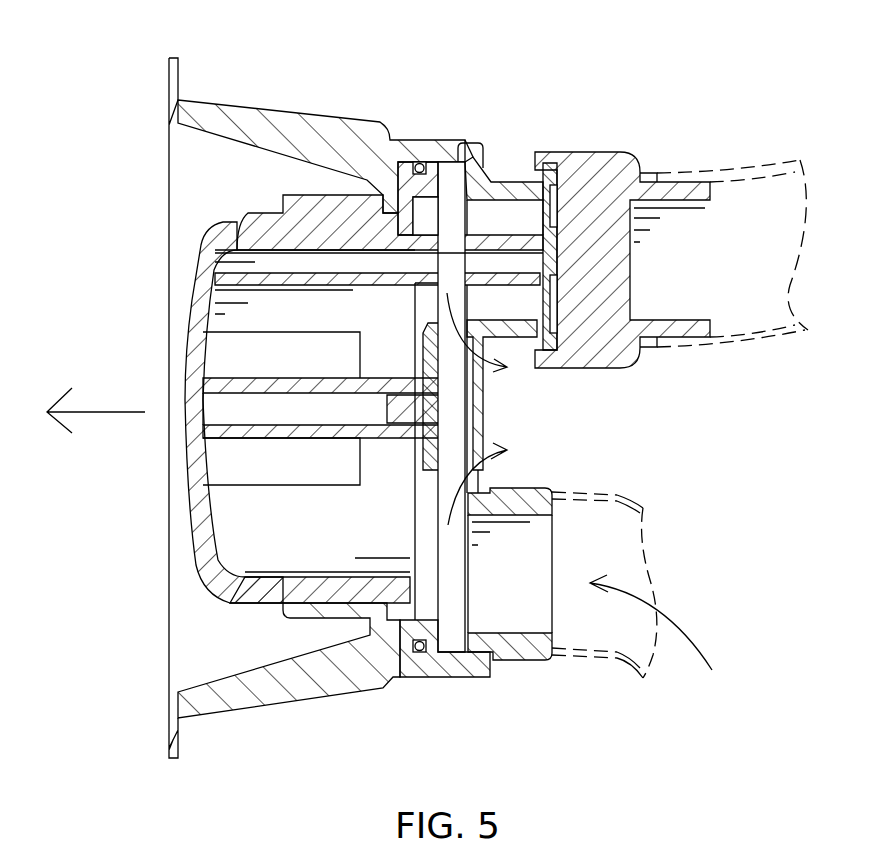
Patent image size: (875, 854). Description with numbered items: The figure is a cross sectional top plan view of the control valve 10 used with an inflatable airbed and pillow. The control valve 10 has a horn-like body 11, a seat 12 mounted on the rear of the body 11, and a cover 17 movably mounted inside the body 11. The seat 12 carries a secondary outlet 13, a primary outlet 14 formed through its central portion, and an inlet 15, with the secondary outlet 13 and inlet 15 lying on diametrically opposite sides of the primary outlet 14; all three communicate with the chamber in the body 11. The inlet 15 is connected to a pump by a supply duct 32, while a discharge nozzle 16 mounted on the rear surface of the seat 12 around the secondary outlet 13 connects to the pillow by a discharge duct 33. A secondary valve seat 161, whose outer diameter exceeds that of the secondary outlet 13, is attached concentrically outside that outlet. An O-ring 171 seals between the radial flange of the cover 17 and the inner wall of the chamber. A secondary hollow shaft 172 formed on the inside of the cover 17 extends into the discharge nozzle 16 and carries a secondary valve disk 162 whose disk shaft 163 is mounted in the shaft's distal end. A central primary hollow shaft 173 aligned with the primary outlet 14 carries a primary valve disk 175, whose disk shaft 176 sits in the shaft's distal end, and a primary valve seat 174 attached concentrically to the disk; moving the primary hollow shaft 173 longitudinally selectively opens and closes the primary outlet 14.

The control valve 10 is at (268, 70).
The horn-like body 11 is at (300, 120).
The seat 12 is at (482, 245).
The secondary outlet 13 is at (470, 303).
The primary outlet 14 is at (480, 427).
The inlet 15 is at (468, 570).
The discharge nozzle 16 is at (633, 163).
The cover 17 is at (205, 245).
The supply duct 32 is at (635, 480).
The discharge duct 33 is at (770, 165).
The secondary valve seat 161 is at (547, 170).
The secondary valve disk 162 is at (553, 218).
The disk shaft 163 is at (553, 293).
The O-ring 171 is at (417, 164).
The secondary hollow shaft 172 is at (477, 150).
The primary hollow shaft 173 is at (275, 385).
The primary valve seat 174 is at (447, 380).
The primary valve disk 175 is at (418, 480).
The disk shaft 176 is at (387, 407).